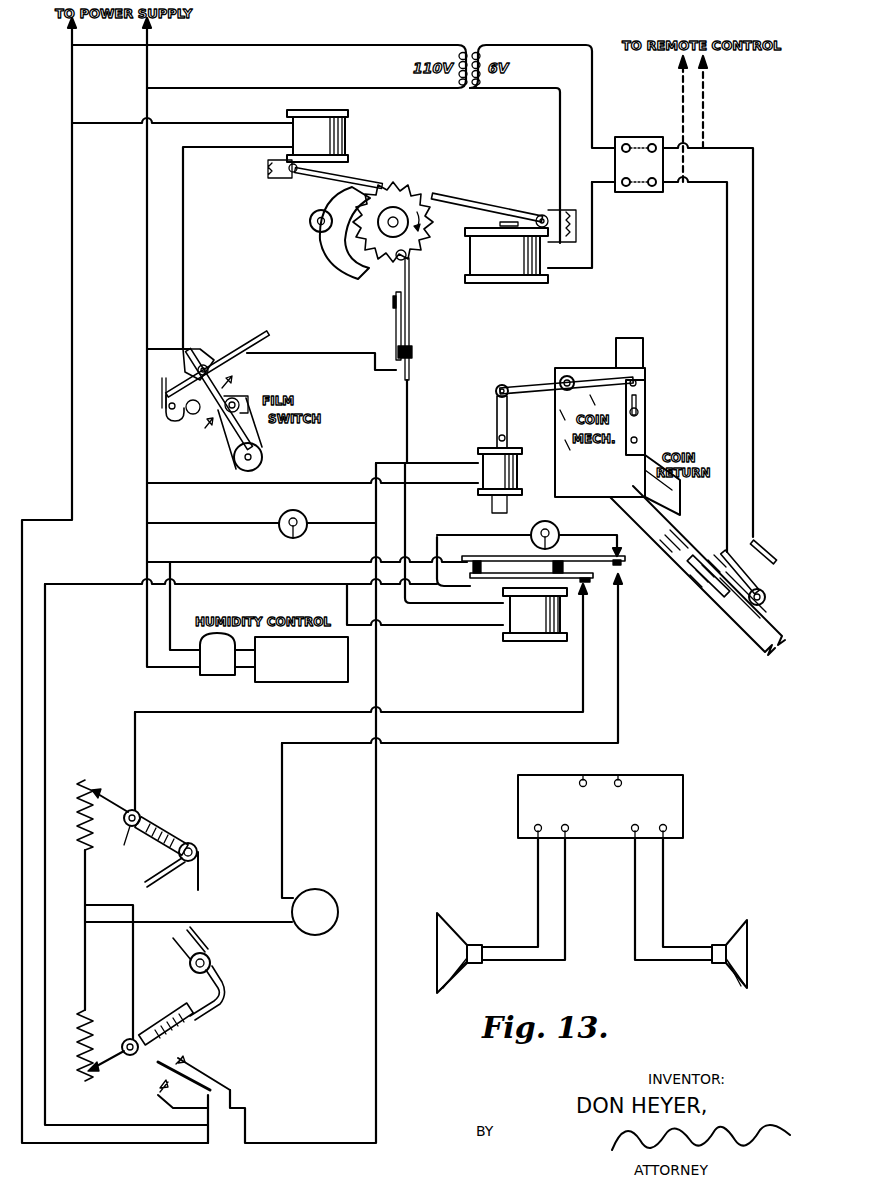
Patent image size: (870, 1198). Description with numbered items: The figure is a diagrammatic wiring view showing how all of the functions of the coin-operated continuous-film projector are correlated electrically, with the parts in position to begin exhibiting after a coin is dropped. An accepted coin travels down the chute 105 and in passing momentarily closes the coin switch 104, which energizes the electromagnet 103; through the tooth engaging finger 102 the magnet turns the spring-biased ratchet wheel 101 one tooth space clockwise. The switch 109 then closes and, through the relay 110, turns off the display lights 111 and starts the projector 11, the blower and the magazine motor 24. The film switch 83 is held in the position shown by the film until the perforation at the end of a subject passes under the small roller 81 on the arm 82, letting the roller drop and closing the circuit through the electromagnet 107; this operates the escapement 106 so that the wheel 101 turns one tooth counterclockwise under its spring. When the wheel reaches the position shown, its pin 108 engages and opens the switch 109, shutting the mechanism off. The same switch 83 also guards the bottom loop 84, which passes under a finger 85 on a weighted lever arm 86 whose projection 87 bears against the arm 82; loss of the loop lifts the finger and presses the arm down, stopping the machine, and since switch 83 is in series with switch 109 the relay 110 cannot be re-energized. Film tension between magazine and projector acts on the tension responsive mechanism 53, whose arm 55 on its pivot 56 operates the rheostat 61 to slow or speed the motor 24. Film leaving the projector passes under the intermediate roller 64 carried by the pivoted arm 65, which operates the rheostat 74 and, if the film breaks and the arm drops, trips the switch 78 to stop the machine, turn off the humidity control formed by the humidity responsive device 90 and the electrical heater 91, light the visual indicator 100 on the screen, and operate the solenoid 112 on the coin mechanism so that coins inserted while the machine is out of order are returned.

The projector 11 is at (676, 807).
The magazine motor 24 is at (327, 892).
The tension responsive mechanism 53 is at (175, 864).
The arm 55 is at (177, 835).
The pivot 56 is at (116, 824).
The rheostat 61 is at (88, 836).
The intermediate roller 64 is at (214, 963).
The pivoted arm 65 is at (217, 1009).
The rheostat 74 is at (94, 1054).
The switch 78 is at (165, 1077).
The small roller 81 is at (236, 450).
The arm 82 is at (248, 396).
The film switch 83 is at (199, 425).
The bottom loop 84 is at (177, 423).
The finger 85 is at (169, 406).
The weighted lever arm 86 is at (258, 332).
The projection 87 is at (238, 350).
The humidity responsive device 90 is at (217, 654).
The electrical heater 91 is at (301, 659).
The visual indicator 100 is at (304, 518).
The ratchet wheel 101 is at (399, 196).
The tooth engaging finger 102 is at (473, 197).
The electromagnet 103 is at (506, 255).
The coin switch 104 is at (758, 572).
The chute 105 is at (738, 605).
The escapement 106 is at (333, 258).
The electromagnet 107 is at (335, 147).
The pin 108 is at (398, 262).
The switch 109 is at (406, 300).
The relay 110 is at (537, 623).
The display lights 111 is at (548, 523).
The solenoid 112 is at (488, 452).